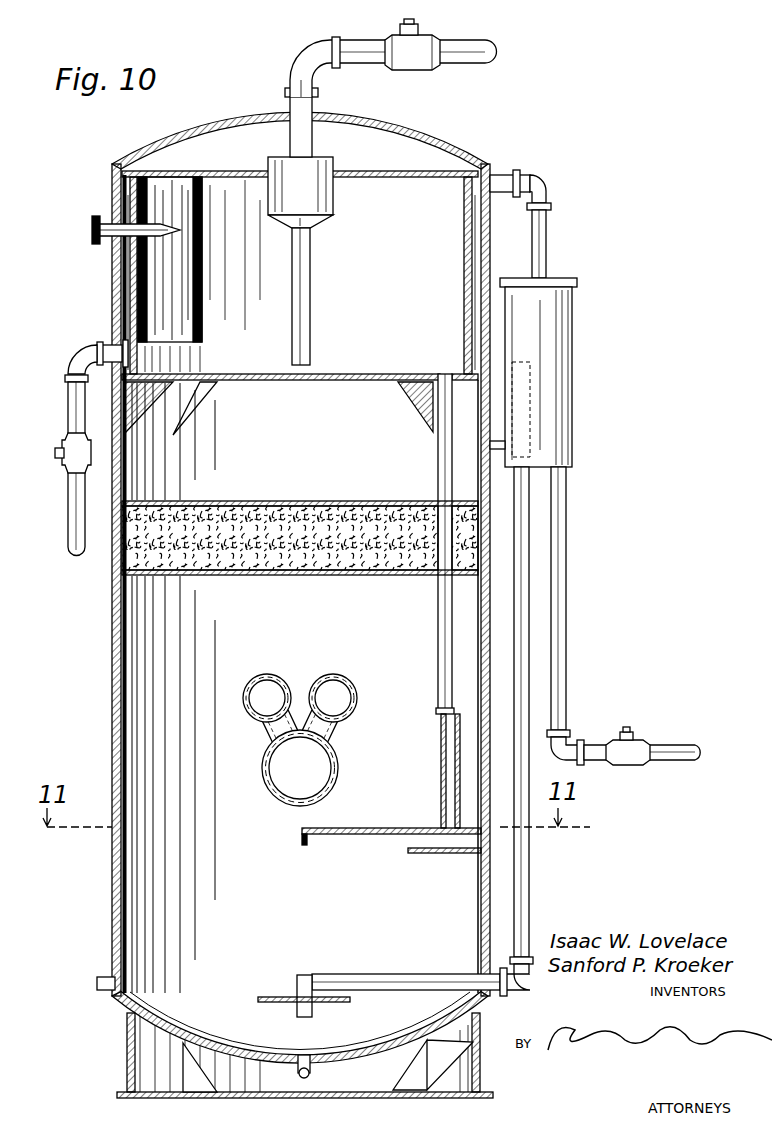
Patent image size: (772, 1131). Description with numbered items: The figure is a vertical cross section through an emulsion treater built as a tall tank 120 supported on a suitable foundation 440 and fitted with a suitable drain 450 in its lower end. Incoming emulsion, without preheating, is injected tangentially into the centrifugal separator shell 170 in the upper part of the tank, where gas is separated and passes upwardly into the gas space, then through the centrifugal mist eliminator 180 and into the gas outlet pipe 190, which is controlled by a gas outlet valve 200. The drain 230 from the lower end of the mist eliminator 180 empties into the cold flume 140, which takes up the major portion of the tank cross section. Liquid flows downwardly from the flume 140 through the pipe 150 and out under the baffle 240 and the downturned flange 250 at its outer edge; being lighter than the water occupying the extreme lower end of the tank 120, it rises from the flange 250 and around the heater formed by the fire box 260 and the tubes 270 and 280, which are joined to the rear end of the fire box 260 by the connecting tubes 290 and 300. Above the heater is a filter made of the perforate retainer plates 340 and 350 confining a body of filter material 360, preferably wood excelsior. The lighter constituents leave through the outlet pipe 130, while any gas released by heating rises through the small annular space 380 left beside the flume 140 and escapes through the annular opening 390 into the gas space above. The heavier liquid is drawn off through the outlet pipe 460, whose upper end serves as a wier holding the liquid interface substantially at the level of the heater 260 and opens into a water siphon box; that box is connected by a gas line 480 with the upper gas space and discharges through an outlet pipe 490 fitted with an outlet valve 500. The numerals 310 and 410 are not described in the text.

The tank 120 is at (115, 686).
The outlet pipe 130 is at (68, 412).
The cold flume 140 is at (482, 233).
The pipe 150 is at (480, 613).
The centrifugal separator shell 170 is at (205, 222).
The centrifugal mist eliminator 180 is at (335, 198).
The gas outlet pipe 190 is at (467, 65).
The gas outlet valve 200 is at (423, 47).
The drain 230 is at (312, 296).
The baffle 240 is at (362, 828).
The downturned flange 250 is at (308, 840).
The fire box 260 is at (338, 770).
The tube 270 is at (353, 702).
The tube 280 is at (268, 675).
The connecting tube 290 is at (347, 722).
The connecting tube 300 is at (262, 735).
The side pipe 310 is at (125, 345).
The retainer plate 340 is at (360, 575).
The retainer plate 350 is at (390, 503).
The filter material 360 is at (300, 505).
The annular space 380 is at (480, 265).
The annular opening 390 is at (484, 165).
The external vessel 410 is at (575, 413).
The foundation 440 is at (481, 1065).
The drain 450 is at (312, 1072).
The outlet pipe 460 is at (410, 975).
The gas line 480 is at (538, 195).
The outlet pipe 490 is at (562, 530).
The outlet valve 500 is at (632, 767).